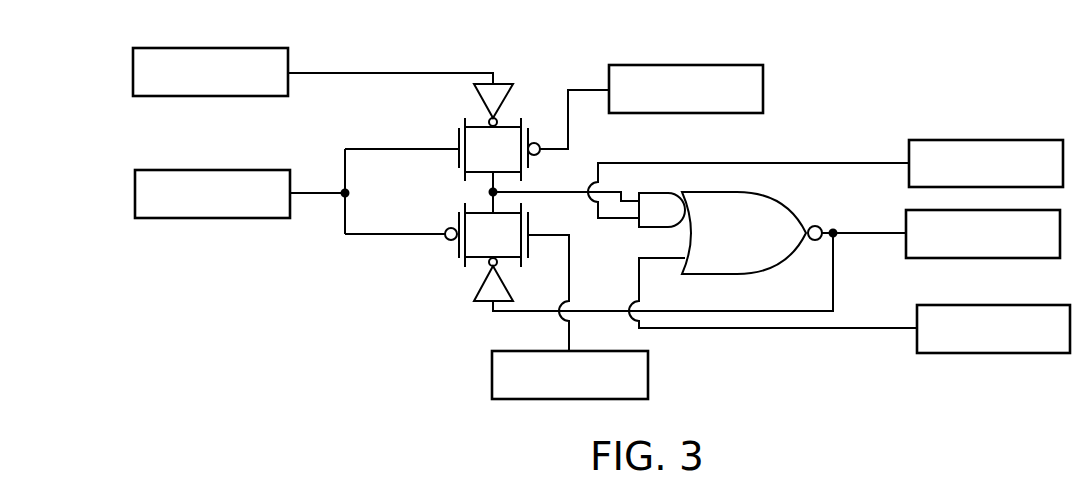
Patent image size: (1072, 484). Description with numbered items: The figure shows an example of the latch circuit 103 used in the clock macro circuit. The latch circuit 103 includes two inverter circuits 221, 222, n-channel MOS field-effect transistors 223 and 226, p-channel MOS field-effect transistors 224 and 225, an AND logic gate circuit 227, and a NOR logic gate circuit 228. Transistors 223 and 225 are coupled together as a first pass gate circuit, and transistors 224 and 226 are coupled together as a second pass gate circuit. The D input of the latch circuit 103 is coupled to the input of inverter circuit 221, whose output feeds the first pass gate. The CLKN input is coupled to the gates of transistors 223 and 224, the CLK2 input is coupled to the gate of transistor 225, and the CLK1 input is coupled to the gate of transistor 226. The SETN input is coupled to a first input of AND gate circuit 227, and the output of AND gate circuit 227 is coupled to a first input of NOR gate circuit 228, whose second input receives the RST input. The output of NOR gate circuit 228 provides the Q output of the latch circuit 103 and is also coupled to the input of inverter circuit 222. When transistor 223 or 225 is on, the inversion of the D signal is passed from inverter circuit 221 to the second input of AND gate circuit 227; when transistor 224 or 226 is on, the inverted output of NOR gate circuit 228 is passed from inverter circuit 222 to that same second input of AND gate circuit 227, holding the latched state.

The latch circuit 103 is at (389, 36).
The inverter circuit 221 is at (508, 83).
The inverter circuit 222 is at (481, 302).
The n-channel MOS field-effect transistor 223 is at (459, 163).
The p-channel MOS field-effect transistor 224 is at (459, 250).
The p-channel MOS field-effect transistor 225 is at (549, 117).
The n-channel MOS field-effect transistor 226 is at (531, 222).
The AND logic gate circuit 227 is at (642, 229).
The NOR logic gate circuit 228 is at (787, 210).